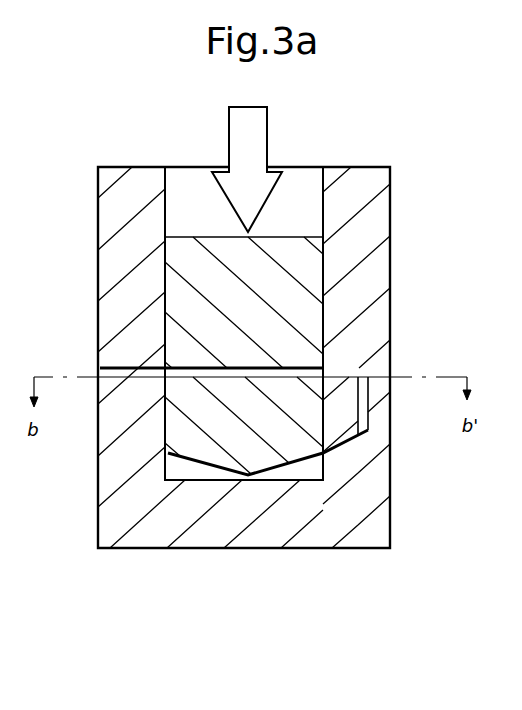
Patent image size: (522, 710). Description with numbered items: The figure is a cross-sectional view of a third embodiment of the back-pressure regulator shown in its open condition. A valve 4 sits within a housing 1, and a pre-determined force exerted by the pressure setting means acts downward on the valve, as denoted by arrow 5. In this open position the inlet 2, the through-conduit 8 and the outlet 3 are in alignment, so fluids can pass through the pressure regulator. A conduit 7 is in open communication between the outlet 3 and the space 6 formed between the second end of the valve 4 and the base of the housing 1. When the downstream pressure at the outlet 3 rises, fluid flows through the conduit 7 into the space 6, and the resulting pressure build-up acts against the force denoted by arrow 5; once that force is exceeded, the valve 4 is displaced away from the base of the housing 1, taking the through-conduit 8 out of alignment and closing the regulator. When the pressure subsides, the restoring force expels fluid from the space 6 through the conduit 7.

The housing 1 is at (370, 276).
The inlet 2 is at (98, 377).
The outlet 3 is at (390, 383).
The valve 4 is at (290, 258).
The arrow 5 is at (252, 140).
The space 6 is at (192, 472).
The conduit 7 is at (363, 415).
The through-conduit 8 is at (270, 370).